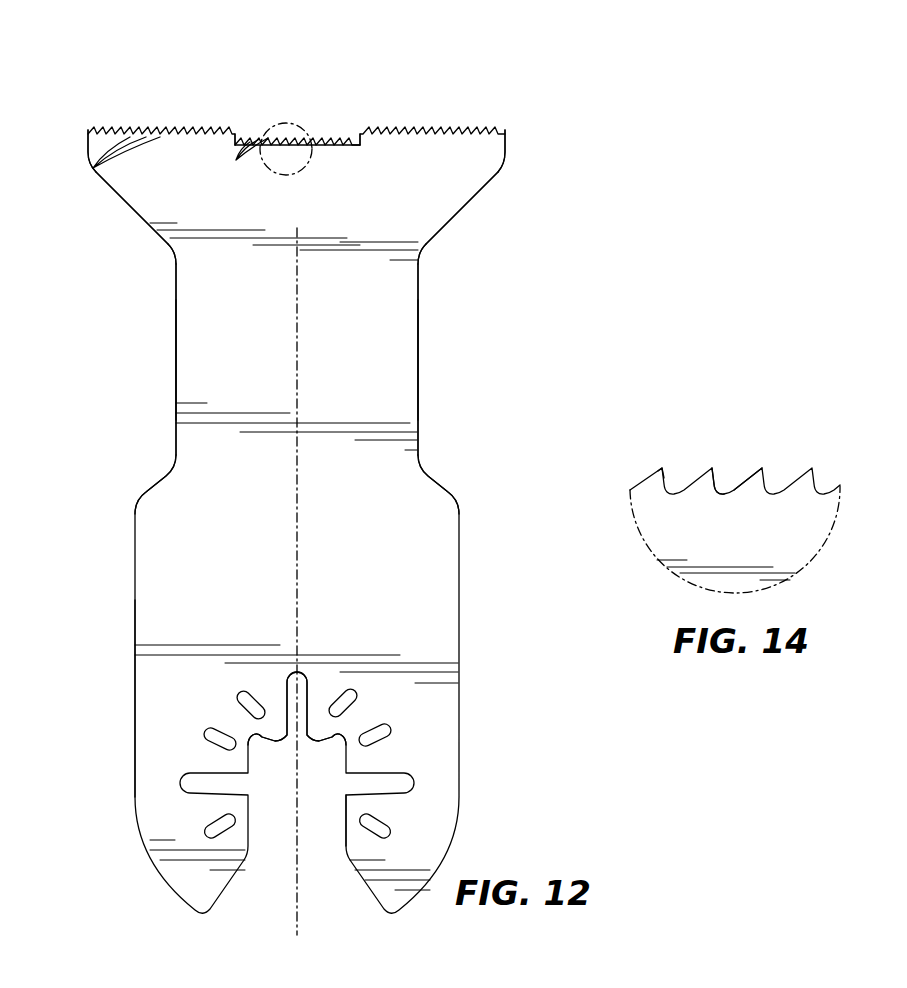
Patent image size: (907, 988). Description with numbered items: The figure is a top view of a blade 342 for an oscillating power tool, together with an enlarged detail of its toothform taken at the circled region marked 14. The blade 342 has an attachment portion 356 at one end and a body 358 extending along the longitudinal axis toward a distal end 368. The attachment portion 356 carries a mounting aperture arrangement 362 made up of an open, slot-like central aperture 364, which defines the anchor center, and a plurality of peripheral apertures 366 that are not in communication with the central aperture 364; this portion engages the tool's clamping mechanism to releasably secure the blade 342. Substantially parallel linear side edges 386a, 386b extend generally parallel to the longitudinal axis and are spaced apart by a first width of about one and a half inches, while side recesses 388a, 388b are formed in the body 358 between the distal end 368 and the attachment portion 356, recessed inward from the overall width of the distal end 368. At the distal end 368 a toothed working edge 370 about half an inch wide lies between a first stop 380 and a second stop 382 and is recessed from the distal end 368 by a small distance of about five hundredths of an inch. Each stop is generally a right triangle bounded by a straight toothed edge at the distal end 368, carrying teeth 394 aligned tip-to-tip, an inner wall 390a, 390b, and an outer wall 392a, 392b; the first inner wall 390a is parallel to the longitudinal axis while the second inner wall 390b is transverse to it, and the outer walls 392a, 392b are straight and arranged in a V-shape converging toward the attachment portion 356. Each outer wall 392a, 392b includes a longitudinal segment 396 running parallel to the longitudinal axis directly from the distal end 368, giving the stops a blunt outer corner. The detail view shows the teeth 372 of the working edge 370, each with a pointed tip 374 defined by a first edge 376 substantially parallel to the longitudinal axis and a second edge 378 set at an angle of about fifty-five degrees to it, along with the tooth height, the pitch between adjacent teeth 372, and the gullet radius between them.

In FIG. 12, the blade 342 is at (549, 87).
In FIG. 12, the attachment portion 356 is at (172, 783).
In FIG. 12, the body 358 is at (368, 333).
In FIG. 12, the mounting aperture arrangement 362 is at (403, 747).
In FIG. 12, the central aperture 364 is at (345, 815).
In FIG. 12, the peripheral apertures 366 is at (208, 730).
In FIG. 12, the distal end 368 is at (80, 133).
In FIG. 12, the working edge 370 is at (338, 150).
In FIG. 12, the teeth 372 is at (236, 158).
In FIG. 14, the teeth 372 is at (652, 481).
In FIG. 14, the pointed tip 374 is at (664, 468).
In FIG. 14, the first edge 376 is at (716, 474).
In FIG. 14, the second edge 378 is at (709, 476).
In FIG. 12, the first stop 380 is at (145, 167).
In FIG. 12, the second stop 382 is at (447, 177).
In FIG. 12, the first side edge 386a is at (135, 556).
In FIG. 12, the second side edge 386b is at (459, 556).
In FIG. 12, the first side recess 388a is at (160, 346).
In FIG. 12, the second side recess 388b is at (440, 346).
In FIG. 12, the first inner wall 390a is at (238, 140).
In FIG. 12, the second inner wall 390b is at (357, 140).
In FIG. 12, the first outer wall 392a is at (125, 203).
In FIG. 12, the second outer wall 392b is at (470, 207).
In FIG. 12, the teeth 394 is at (93, 168).
In FIG. 12, the longitudinal segment 396 is at (90, 148).
In FIG. 12, the detail view circle 14 is at (287, 142).